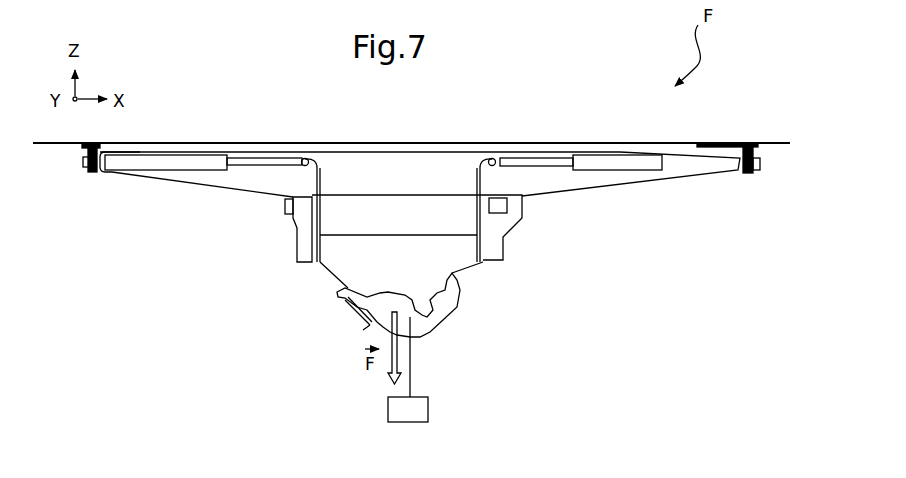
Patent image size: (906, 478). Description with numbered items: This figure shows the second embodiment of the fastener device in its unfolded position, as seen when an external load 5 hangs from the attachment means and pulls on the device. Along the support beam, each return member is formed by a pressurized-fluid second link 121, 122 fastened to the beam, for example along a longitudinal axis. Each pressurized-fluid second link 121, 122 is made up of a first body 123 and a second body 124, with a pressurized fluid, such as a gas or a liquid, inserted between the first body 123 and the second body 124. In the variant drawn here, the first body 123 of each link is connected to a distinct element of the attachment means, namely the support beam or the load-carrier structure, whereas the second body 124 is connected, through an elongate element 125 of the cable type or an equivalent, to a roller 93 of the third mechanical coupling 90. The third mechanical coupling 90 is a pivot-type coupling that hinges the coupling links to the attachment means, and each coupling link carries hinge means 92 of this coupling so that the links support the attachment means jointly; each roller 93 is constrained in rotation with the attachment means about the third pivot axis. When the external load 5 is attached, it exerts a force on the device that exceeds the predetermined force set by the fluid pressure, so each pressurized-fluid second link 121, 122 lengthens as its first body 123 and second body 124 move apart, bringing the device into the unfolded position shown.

The external load 5 is at (428, 410).
The third mechanical coupling 90 is at (290, 248).
The hinge means 92 is at (506, 244).
The roller 93 is at (315, 263).
The pressurized-fluid second link 121 is at (202, 173).
The pressurized-fluid second link 122 is at (590, 182).
The first body 123 is at (157, 150).
The second body 124 is at (283, 151).
The elongate element 125 is at (322, 180).